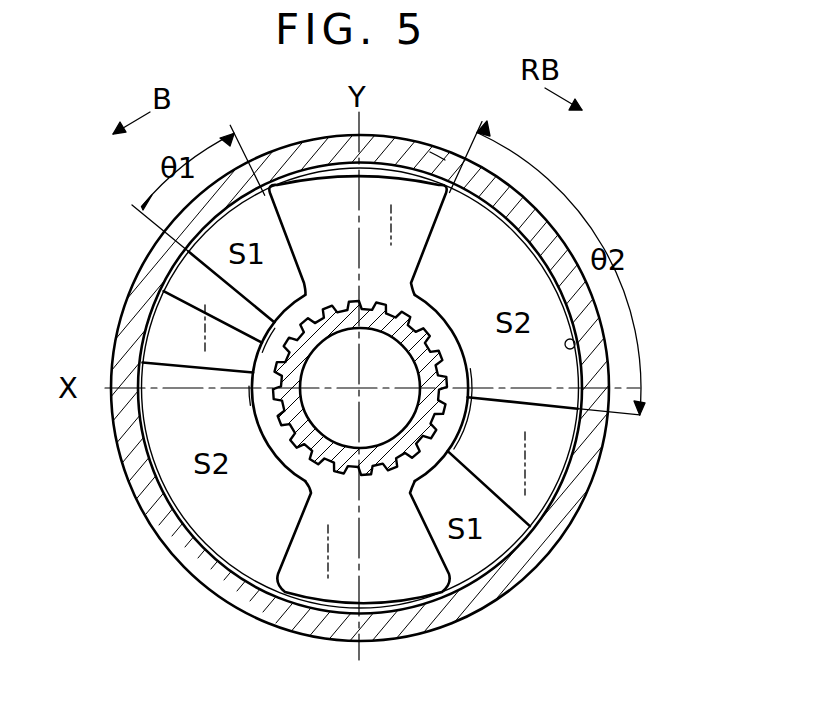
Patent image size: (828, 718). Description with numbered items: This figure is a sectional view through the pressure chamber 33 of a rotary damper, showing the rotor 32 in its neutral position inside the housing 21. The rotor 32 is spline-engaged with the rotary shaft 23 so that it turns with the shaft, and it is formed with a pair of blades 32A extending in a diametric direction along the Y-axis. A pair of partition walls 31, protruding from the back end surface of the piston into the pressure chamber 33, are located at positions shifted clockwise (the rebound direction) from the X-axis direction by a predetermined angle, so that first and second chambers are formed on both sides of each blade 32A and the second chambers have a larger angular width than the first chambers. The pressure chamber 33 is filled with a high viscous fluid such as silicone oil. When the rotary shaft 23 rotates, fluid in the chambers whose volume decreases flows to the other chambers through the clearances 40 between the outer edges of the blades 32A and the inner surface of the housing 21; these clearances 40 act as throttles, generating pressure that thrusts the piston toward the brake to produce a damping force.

The housing 21 is at (534, 565).
The rotary shaft 23 is at (313, 445).
The partition walls 31 is at (172, 347).
The rotor 32 is at (430, 312).
The blades 32A is at (327, 213).
The pressure chamber 33 is at (593, 347).
The clearances 40 is at (425, 150).